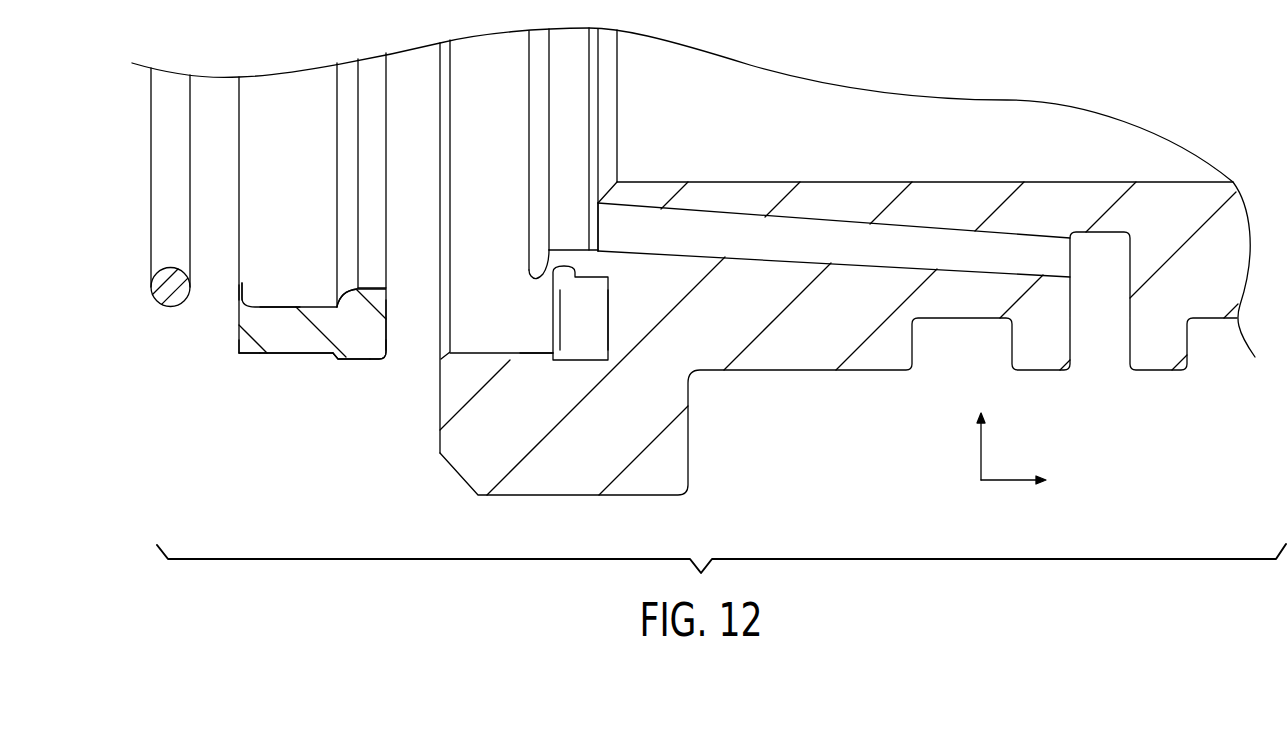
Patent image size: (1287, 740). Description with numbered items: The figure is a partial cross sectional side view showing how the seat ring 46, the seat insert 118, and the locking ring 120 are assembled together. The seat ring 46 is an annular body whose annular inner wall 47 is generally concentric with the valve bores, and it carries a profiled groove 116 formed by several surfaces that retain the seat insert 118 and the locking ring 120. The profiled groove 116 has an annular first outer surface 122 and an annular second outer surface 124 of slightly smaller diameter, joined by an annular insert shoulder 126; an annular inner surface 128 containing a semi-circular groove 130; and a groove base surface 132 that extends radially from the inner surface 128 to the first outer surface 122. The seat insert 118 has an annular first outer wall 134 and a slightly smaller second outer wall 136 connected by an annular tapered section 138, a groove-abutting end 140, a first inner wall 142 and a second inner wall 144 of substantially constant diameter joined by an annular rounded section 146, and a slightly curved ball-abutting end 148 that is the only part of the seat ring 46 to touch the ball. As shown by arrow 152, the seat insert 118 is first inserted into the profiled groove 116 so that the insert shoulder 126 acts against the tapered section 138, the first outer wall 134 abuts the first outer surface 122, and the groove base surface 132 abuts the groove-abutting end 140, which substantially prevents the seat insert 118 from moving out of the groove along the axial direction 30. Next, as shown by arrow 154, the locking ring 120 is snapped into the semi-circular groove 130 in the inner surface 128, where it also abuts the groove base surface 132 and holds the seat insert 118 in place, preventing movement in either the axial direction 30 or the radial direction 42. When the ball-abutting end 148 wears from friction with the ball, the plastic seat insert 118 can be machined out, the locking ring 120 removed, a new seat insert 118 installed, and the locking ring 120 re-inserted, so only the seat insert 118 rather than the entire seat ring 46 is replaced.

The axial direction 30 is at (1006, 482).
The radial direction 42 is at (978, 452).
The seat ring 46 is at (1034, 44).
The annular inner wall 47 is at (853, 182).
The profiled groove 116 is at (586, 340).
The seat insert 118 is at (229, 168).
The locking ring 120 is at (135, 165).
The first outer surface 122 is at (582, 361).
The second outer surface 124 is at (470, 358).
The insert shoulder 126 is at (550, 358).
The inner surface 128 is at (588, 277).
The semi-circular groove 130 is at (543, 260).
The groove base surface 132 is at (610, 323).
The first outer wall 134 is at (358, 361).
The second outer wall 136 is at (250, 357).
The tapered section 138 is at (330, 358).
The groove-abutting end 140 is at (388, 352).
The first inner wall 142 is at (372, 287).
The second inner wall 144 is at (273, 307).
The rounded section 146 is at (350, 300).
The ball-abutting end 148 is at (240, 280).
The arrow 152 is at (393, 340).
The arrow 154 is at (224, 293).